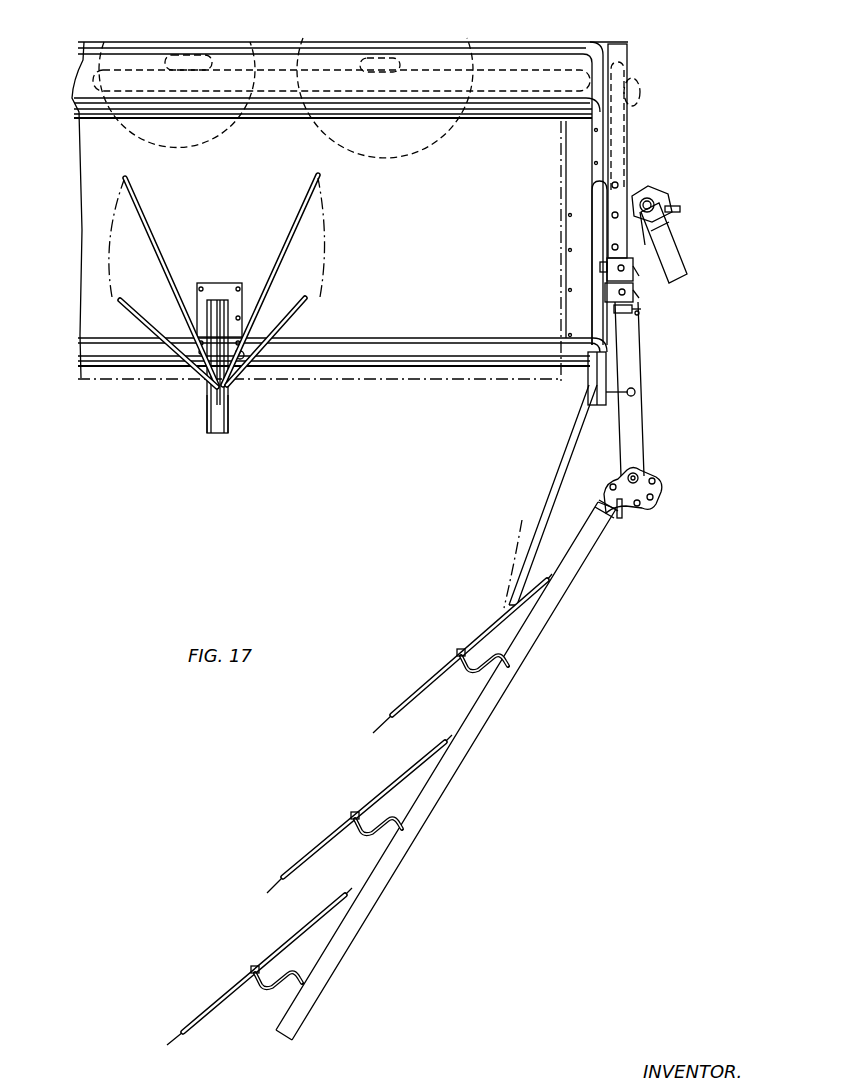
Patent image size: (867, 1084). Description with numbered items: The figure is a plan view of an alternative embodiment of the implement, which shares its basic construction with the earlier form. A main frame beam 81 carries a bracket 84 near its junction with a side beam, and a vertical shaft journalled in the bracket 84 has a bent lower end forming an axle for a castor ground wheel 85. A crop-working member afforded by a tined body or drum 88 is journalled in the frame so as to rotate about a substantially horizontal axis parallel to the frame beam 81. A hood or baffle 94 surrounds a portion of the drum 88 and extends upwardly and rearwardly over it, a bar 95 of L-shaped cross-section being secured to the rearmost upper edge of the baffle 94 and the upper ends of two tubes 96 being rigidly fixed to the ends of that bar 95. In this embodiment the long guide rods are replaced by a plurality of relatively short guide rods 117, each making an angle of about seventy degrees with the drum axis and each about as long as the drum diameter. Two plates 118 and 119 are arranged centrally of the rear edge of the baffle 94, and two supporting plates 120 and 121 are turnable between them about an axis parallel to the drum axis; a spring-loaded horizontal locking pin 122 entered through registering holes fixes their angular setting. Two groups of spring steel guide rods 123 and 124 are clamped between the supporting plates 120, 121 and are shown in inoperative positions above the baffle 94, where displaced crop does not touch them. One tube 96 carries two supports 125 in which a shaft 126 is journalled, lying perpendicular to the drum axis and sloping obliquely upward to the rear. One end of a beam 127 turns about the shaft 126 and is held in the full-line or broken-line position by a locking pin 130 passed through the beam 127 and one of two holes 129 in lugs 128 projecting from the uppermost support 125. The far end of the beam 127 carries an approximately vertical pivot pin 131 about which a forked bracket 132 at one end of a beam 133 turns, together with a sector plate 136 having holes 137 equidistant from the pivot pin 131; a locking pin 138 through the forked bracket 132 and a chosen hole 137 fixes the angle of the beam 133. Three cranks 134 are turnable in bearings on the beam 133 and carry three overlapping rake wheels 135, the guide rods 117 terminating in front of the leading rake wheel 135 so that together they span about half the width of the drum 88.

The main frame beam 81 is at (681, 65).
The bracket 84 is at (633, 198).
The ground wheel 85 is at (668, 250).
The tined body or drum 88 is at (323, 378).
The hood or baffle 94 is at (83, 290).
The bar of L-shaped cross-section 95 is at (407, 347).
The tube 96 is at (592, 220).
The guide rod 117 is at (568, 457).
The plate 118 is at (203, 399).
The plate 119 is at (232, 312).
The supporting plate 120 is at (210, 432).
The supporting plate 121 is at (228, 435).
The spring-loaded horizontal locking pin 122 is at (243, 351).
The spring steel guide rods 123 is at (160, 237).
The spring steel guide rods 124 is at (298, 209).
The support 125 is at (607, 300).
The shaft 126 is at (636, 295).
The beam 127 is at (629, 131).
The lug 128 is at (634, 275).
The hole 129 is at (620, 268).
The locking pin 130 is at (638, 322).
The pivot pin 131 is at (633, 472).
The forked bracket 132 is at (606, 504).
The beam 133 is at (533, 88).
The crank 134 is at (487, 664).
The rake wheel 135 is at (380, 143).
The sector plate 136 is at (650, 482).
The hole 137 is at (651, 501).
The locking pin 138 is at (626, 519).